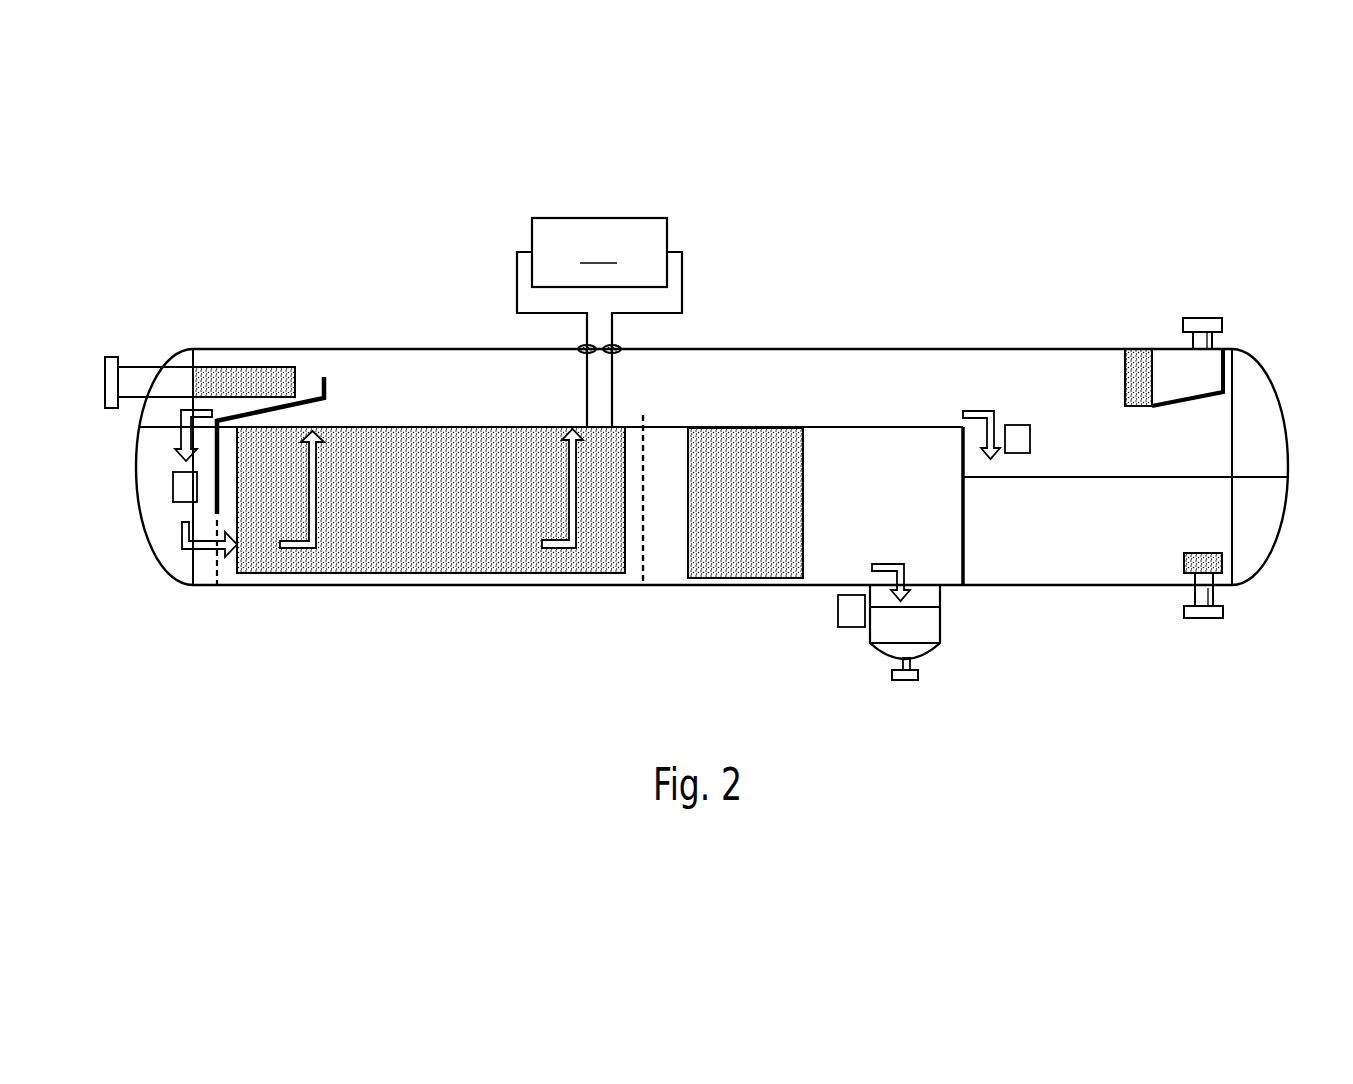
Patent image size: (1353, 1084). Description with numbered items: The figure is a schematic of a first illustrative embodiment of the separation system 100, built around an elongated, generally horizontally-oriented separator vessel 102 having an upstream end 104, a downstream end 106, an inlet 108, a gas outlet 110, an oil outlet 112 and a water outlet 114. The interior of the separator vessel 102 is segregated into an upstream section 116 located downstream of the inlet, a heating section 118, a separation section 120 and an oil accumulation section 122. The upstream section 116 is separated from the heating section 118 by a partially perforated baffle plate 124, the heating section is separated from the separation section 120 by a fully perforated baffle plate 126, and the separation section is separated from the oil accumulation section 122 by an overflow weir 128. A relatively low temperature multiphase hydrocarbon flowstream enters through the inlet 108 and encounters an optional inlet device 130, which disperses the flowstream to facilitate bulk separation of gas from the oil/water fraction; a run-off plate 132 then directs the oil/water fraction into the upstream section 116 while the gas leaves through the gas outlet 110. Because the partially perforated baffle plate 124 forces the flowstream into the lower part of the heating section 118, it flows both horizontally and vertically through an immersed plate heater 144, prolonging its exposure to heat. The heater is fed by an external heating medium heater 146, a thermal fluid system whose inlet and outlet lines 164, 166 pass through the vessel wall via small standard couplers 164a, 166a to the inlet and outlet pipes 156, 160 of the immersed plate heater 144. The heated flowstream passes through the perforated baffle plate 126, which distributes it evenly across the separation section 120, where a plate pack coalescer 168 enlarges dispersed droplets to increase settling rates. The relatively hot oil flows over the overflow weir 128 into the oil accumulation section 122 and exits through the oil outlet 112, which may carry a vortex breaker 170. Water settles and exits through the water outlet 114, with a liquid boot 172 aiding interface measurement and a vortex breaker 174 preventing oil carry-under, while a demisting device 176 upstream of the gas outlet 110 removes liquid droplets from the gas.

The separation system 100 is at (972, 243).
The separator vessel 102 is at (841, 349).
The upstream end 104 is at (166, 572).
The downstream end 106 is at (1258, 562).
The inlet 108 is at (147, 366).
The gas outlet 110 is at (1222, 318).
The oil outlet 112 is at (1205, 619).
The water outlet 114 is at (912, 681).
The upstream section 116 is at (160, 530).
The heating section 118 is at (425, 582).
The separation section 120 is at (673, 579).
The oil accumulation section 122 is at (1120, 578).
The partially perforated baffle plate 124 is at (213, 514).
The fully perforated baffle plate 126 is at (641, 577).
The overflow weir 128 is at (963, 498).
The inlet device 130 is at (263, 367).
The run-off plate 132 is at (330, 388).
The immersed plate heater 144 is at (412, 432).
The heating medium heater 146 is at (599, 252).
The inlet pipe 156 is at (586, 393).
The outlet pipe 160 is at (613, 393).
The inlet line 164 is at (517, 286).
The coupler 164a is at (578, 346).
The outlet line 166 is at (683, 293).
The coupler 166a is at (621, 346).
The plate pack coalescer 168 is at (790, 490).
The vortex breaker 170 is at (1200, 554).
The liquid boot 172 is at (940, 633).
The vortex breaker 174 is at (940, 597).
The demisting device 176 is at (1125, 380).